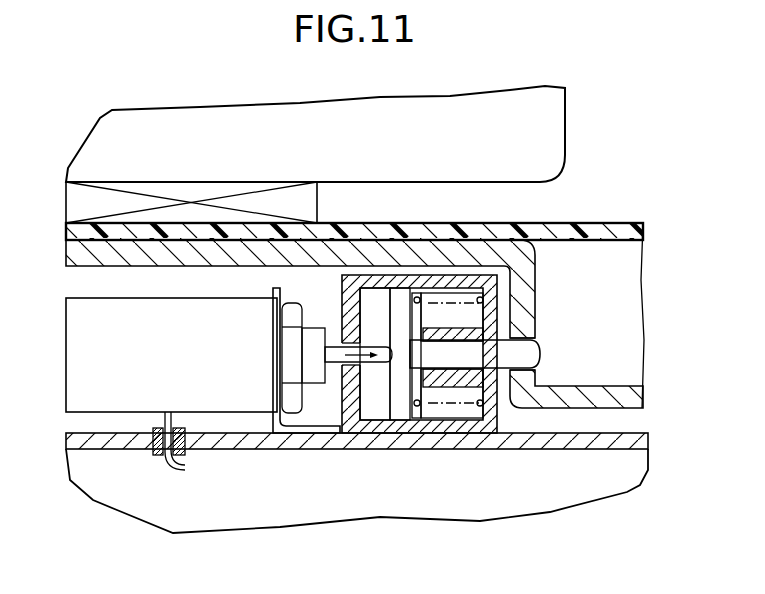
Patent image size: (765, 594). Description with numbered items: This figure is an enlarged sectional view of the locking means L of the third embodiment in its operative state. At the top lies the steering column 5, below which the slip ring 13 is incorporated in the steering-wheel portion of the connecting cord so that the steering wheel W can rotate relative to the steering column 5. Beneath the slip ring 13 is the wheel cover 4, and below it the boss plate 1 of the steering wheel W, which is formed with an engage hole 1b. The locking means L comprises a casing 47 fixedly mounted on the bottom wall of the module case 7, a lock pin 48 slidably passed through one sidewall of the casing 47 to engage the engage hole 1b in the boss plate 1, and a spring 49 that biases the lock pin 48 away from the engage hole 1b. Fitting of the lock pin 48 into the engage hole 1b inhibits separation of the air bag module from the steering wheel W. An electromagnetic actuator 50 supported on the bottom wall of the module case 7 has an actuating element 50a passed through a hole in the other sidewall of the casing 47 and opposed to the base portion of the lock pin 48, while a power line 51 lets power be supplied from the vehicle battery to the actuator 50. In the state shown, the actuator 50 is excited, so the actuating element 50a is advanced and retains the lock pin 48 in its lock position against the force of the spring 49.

The steering column 5 is at (320, 152).
The slip ring 13 is at (318, 205).
The wheel cover 4 is at (521, 226).
The steering wheel W is at (630, 190).
The boss plate 1 is at (542, 261).
The engage hole 1b is at (537, 347).
The lock pin 48 is at (541, 357).
The casing 47 is at (342, 405).
The actuating element 50a is at (333, 323).
The spring 49 is at (437, 300).
The electromagnetic actuator 50 is at (182, 367).
The power line 51 is at (184, 470).
The module case 7 is at (645, 433).
The locking means L is at (512, 420).